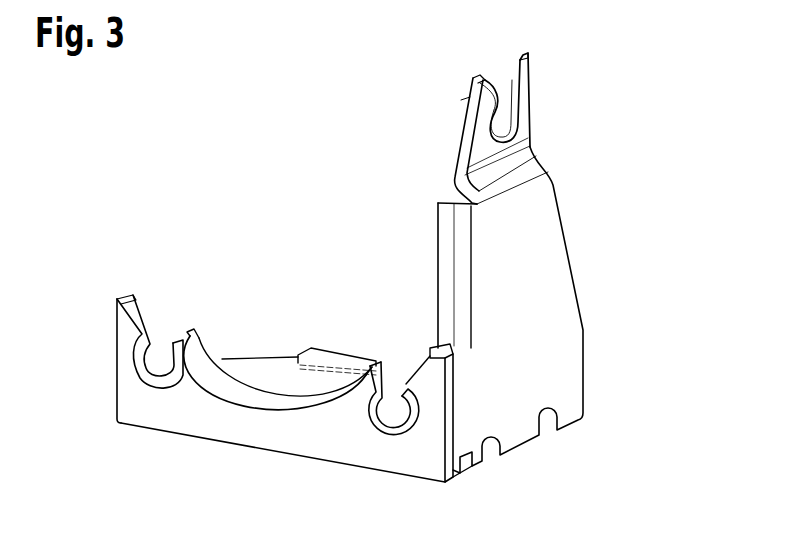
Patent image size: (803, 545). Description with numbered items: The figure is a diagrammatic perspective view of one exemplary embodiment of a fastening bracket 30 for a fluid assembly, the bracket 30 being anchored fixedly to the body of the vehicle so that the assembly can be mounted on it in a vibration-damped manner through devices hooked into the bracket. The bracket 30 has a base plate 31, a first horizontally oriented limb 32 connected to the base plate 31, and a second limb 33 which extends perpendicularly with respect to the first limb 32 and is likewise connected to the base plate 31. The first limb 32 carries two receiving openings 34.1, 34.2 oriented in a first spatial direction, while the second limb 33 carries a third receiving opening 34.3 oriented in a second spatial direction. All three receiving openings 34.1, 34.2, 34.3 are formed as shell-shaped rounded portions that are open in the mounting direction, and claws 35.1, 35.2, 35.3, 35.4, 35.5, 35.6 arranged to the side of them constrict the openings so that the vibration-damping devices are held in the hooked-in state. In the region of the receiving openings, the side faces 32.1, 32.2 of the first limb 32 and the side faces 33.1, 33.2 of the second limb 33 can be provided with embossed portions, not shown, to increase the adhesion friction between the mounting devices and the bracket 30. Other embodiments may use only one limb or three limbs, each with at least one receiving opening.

The bracket 30 is at (606, 333).
The base plate 31 is at (276, 368).
The first limb 32 is at (265, 428).
The side face 32.1 is at (152, 413).
The side face 32.2 is at (253, 368).
The second limb 33 is at (533, 238).
The side face 33.1 is at (522, 128).
The side face 33.2 is at (458, 146).
The receiving opening 34.1 is at (160, 342).
The receiving opening 34.2 is at (398, 385).
The receiving opening 34.3 is at (498, 76).
The claw 35.1 is at (122, 318).
The claw 35.2 is at (195, 334).
The claw 35.3 is at (353, 366).
The claw 35.4 is at (436, 368).
The claw 35.5 is at (485, 97).
The claw 35.6 is at (525, 86).